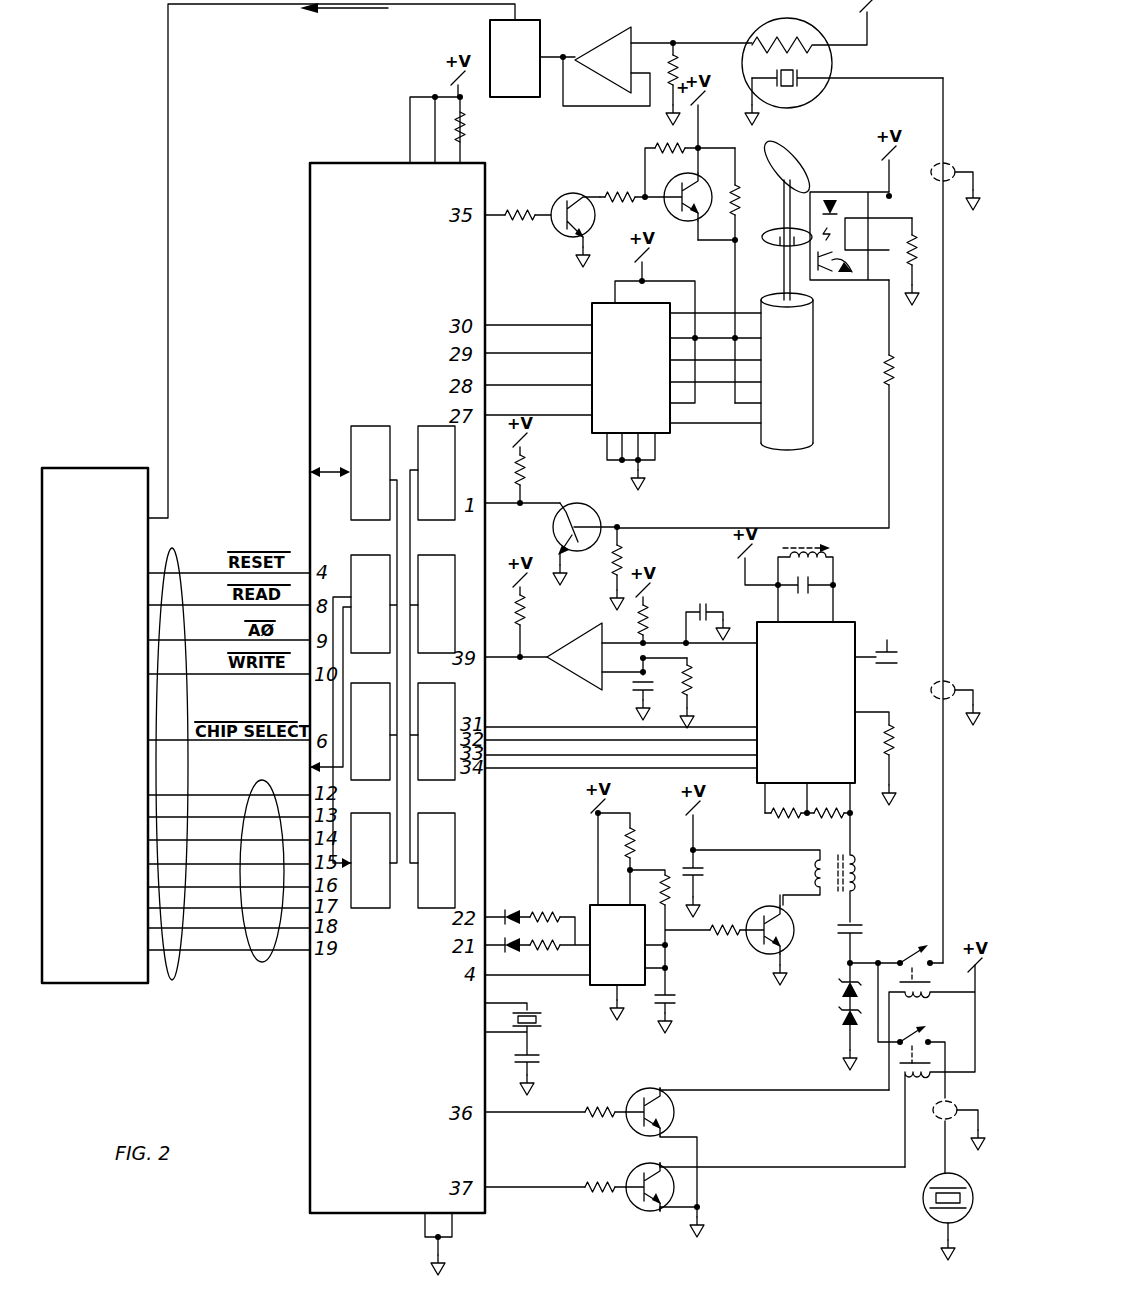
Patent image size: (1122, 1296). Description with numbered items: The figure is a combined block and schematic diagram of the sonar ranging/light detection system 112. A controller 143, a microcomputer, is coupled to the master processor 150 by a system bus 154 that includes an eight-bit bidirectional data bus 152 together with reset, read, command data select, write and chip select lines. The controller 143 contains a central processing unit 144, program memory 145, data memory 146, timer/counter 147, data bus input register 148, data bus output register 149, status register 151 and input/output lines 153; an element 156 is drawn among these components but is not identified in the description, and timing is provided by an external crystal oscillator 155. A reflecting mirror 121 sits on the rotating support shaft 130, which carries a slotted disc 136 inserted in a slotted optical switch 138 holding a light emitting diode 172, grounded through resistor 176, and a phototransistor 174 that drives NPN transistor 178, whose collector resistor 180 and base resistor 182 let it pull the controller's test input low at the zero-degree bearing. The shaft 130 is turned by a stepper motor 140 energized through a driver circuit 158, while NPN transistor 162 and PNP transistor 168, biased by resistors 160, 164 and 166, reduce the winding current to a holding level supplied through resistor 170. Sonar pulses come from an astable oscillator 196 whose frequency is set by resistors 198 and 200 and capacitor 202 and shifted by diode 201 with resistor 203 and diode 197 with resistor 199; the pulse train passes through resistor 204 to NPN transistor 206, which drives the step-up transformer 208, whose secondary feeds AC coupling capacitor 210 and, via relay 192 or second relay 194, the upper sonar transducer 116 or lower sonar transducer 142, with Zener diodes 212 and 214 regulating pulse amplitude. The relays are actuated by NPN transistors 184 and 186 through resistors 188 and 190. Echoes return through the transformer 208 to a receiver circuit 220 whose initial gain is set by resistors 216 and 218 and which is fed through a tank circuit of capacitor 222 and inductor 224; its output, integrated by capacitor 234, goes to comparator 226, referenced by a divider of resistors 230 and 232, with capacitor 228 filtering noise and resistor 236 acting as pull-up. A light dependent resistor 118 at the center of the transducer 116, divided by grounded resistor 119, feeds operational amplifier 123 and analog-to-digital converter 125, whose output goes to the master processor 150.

The sonar ranging/light detection system 112 is at (135, 207).
The upper sonar transducer 116 is at (830, 62).
The light dependent resistor 118 is at (762, 42).
The grounded resistor 119 is at (678, 61).
The reflecting mirror 121 is at (811, 153).
The operational amplifier 123 is at (604, 74).
The analog-to-digital converter 125 is at (515, 58).
The rotating support shaft 130 is at (780, 190).
The slotted disc 136 is at (773, 247).
The slotted optical switch 138 is at (860, 231).
The stepper motor 140 is at (787, 371).
The lower sonar transducer 142 is at (923, 1198).
The controller 143 is at (397, 688).
The central processing unit 144 is at (437, 860).
The program memory 145 is at (437, 731).
The data memory 146 is at (437, 604).
The timer/counter 147 is at (437, 473).
The data bus input register 148 is at (370, 860).
The data bus output register 149 is at (370, 731).
The master processor 150 is at (98, 725).
The status register 151 is at (371, 604).
The data bus 152 is at (262, 962).
The input/output lines 153 is at (370, 473).
The system bus 154 is at (177, 555).
The external crystal oscillator 155 is at (542, 1008).
The internal bus 156 is at (394, 538).
The driver circuit 158 is at (631, 396).
The resistor 160 is at (545, 218).
The NPN transistor 162 is at (555, 236).
The resistor 164 is at (608, 188).
The resistor 166 is at (655, 145).
The PNP transistor 168 is at (665, 208).
The resistor 170 is at (735, 193).
The light emitting diode 172 is at (827, 192).
The phototransistor 174 is at (834, 276).
The resistor 176 is at (912, 235).
The NPN transistor 178 is at (593, 507).
The resistor 180 is at (528, 464).
The resistor 182 is at (626, 548).
The NPN transistor 184 is at (648, 1080).
The NPN transistor 186 is at (650, 1214).
The resistor 188 is at (603, 1102).
The resistor 190 is at (606, 1198).
The relay 192 is at (920, 950).
The second relay 194 is at (915, 1028).
The astable oscillator 196 is at (617, 962).
The diode 197 is at (507, 950).
The resistor 198 is at (645, 833).
The resistor 199 is at (544, 950).
The resistor 200 is at (672, 882).
The diode 201 is at (512, 907).
The capacitor 202 is at (673, 994).
The resistor 203 is at (540, 911).
The resistor 204 is at (739, 918).
The NPN transistor 206 is at (739, 944).
The step-up transformer 208 is at (856, 857).
The AC coupling capacitor 210 is at (855, 920).
The Zener diode 212 is at (840, 990).
The Zener diode 214 is at (837, 1023).
The resistor 216 is at (770, 820).
The resistor 218 is at (831, 820).
The receiver circuit 220 is at (806, 702).
The capacitor 222 is at (817, 588).
The inductor 224 is at (840, 552).
The comparator 226 is at (568, 680).
The capacitor 228 is at (630, 688).
The resistor 230 is at (694, 670).
The resistor 232 is at (647, 621).
The capacitor 234 is at (706, 608).
The resistor 236 is at (525, 611).